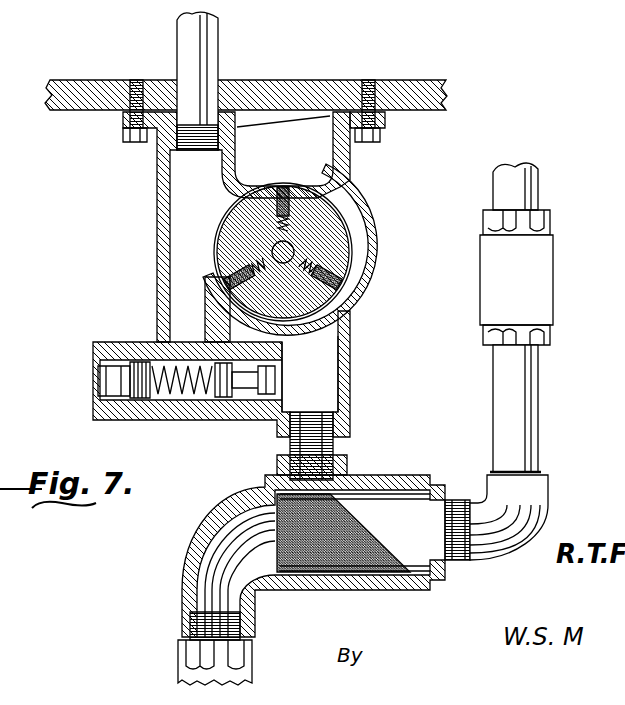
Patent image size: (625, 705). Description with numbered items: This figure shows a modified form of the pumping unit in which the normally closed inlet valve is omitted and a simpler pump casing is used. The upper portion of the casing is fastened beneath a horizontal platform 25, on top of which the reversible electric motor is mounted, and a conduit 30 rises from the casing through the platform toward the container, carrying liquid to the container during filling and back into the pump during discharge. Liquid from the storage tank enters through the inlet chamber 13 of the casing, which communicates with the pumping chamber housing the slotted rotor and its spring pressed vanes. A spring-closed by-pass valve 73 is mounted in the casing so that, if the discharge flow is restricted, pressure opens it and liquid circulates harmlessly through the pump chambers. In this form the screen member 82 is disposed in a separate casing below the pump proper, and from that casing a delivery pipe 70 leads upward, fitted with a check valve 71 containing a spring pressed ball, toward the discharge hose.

The horizontal platform 25 is at (280, 82).
The conduit 30 is at (214, 53).
The inlet chamber 13 is at (306, 383).
The by-pass valve 73 is at (207, 405).
The screen member 82 is at (352, 564).
The check valve 71 is at (547, 278).
The delivery pipe 70 is at (540, 374).